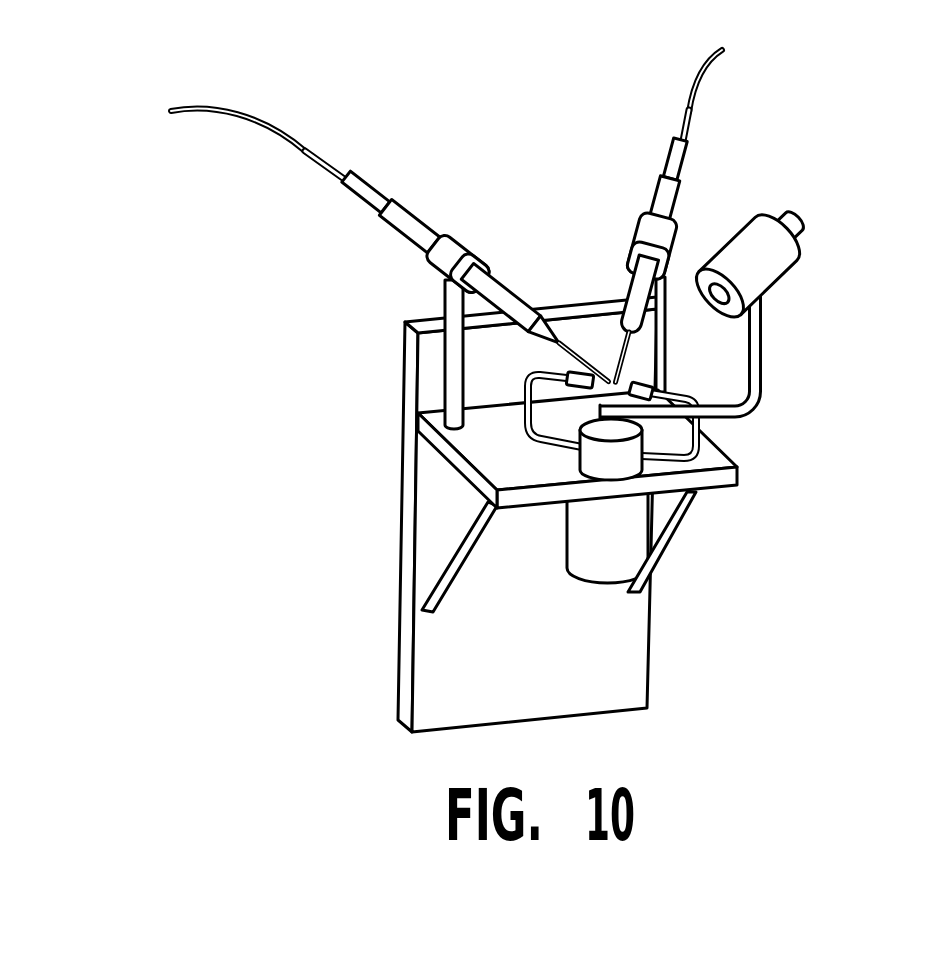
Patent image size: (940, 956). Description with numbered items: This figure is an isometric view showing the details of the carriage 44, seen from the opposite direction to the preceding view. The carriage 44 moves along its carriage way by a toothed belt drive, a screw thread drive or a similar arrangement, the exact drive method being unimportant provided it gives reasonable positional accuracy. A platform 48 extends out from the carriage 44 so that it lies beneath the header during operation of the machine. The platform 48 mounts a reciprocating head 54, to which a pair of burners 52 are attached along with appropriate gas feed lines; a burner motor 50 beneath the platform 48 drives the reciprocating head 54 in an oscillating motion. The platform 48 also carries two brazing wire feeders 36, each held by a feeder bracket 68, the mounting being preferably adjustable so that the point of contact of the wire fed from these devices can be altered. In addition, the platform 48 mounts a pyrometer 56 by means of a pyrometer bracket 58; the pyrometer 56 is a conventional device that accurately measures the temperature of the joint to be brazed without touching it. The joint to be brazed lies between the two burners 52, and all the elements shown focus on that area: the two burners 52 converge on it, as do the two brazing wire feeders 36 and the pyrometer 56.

The brazing wire feeders 36 is at (653, 197).
The carriage 44 is at (463, 514).
The platform 48 is at (492, 501).
The burner motor 50 is at (662, 546).
The burners 52 is at (640, 387).
The reciprocating head 54 is at (681, 472).
The pyrometer 56 is at (788, 250).
The pyrometer bracket 58 is at (730, 355).
The feeder bracket 68 is at (369, 354).